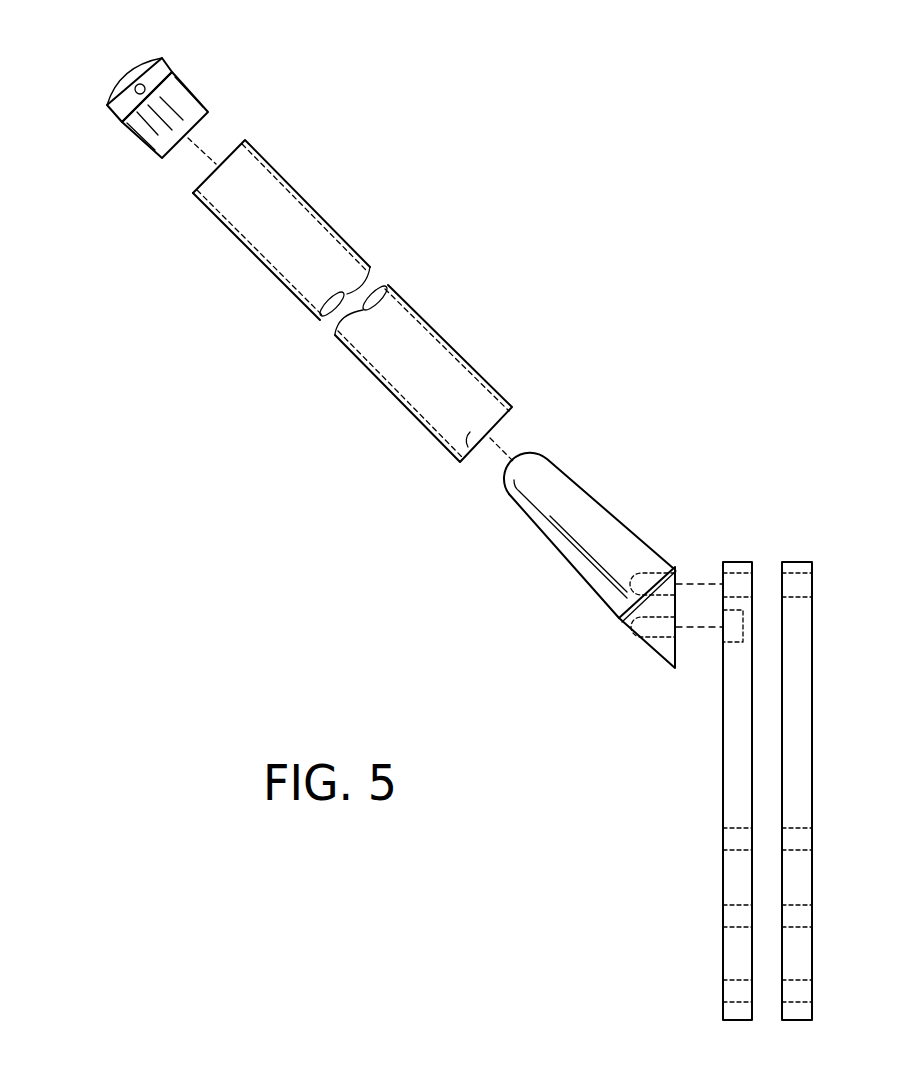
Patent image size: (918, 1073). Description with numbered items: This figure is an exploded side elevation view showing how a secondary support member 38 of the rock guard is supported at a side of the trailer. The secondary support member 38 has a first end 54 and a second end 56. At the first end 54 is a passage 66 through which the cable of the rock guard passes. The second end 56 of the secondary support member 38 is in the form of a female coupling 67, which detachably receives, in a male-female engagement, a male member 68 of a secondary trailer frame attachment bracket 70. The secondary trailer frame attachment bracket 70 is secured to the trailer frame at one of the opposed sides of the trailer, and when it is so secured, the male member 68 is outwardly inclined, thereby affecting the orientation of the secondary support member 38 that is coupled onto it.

The secondary support member 38 is at (456, 150).
The first end 54 is at (107, 107).
The passage 66 is at (137, 89).
The second end 56 is at (512, 407).
The female coupling 67 is at (468, 440).
The male member 68 is at (542, 538).
The secondary trailer frame attachment bracket 70 is at (782, 785).